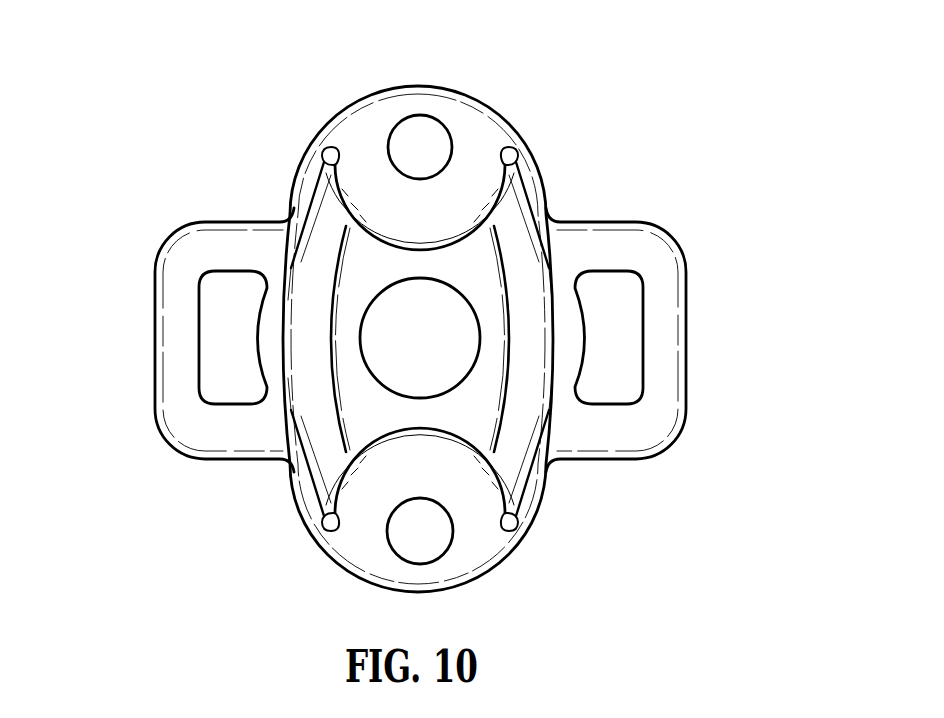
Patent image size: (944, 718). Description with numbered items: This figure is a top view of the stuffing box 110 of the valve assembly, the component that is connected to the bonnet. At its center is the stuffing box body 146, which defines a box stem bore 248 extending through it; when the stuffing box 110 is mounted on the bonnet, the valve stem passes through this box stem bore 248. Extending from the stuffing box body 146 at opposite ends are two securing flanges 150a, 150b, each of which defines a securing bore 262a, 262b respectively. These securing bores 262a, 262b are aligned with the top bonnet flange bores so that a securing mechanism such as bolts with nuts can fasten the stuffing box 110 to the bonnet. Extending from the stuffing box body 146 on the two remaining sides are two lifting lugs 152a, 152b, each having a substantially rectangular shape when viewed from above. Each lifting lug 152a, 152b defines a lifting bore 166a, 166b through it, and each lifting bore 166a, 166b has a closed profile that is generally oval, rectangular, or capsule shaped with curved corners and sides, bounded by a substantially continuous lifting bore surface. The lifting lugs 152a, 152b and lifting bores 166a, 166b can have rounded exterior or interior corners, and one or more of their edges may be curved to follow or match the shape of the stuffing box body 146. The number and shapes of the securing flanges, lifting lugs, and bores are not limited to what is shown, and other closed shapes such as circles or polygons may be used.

The stuffing box 110 is at (751, 138).
The stuffing box body 146 is at (525, 452).
The securing flange 150a is at (487, 547).
The securing flange 150b is at (488, 112).
The lifting lug 152a is at (215, 237).
The lifting lug 152b is at (668, 267).
The lifting bore 166a is at (200, 393).
The lifting bore 166b is at (610, 272).
The box stem bore 248 is at (458, 293).
The securing bore 262a is at (437, 562).
The securing bore 262b is at (430, 115).